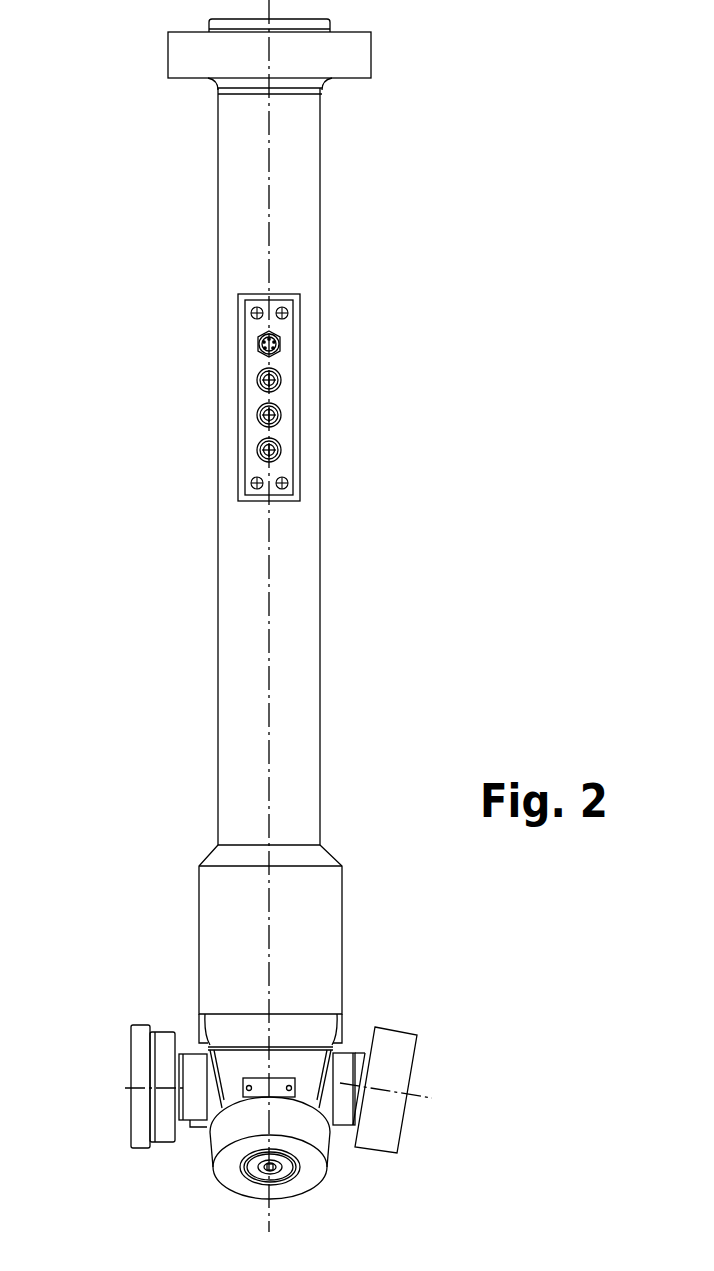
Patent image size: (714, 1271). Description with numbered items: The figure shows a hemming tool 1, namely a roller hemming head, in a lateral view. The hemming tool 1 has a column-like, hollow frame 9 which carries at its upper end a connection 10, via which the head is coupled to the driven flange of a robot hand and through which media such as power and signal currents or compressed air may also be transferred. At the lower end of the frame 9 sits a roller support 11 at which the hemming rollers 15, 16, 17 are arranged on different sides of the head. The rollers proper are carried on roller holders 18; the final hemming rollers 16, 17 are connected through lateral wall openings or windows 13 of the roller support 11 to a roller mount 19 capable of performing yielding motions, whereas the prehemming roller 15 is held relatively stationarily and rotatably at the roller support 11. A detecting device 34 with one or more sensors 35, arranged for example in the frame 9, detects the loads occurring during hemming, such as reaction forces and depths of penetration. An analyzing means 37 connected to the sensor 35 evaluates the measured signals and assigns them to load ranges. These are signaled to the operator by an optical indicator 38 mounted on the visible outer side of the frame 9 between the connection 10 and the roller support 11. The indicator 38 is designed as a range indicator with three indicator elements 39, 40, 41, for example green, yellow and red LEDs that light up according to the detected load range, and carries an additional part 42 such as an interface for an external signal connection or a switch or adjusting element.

The hemming tool 1 is at (318, 228).
The frame 9 is at (240, 633).
The connection 10 is at (178, 53).
The roller support 11 is at (342, 994).
The wall openings or windows 13 is at (267, 1041).
The prehemming roller 15 is at (223, 1142).
The final hemming roller 16 is at (138, 1119).
The final hemming roller 17 is at (388, 1127).
The roller holders 18 is at (194, 1066).
The roller mount 19 is at (246, 943).
The detecting device 34 is at (328, 565).
The sensor 35 is at (253, 750).
The analyzing means 37 is at (292, 373).
The indicator 38 is at (292, 418).
The indicator element 39 is at (258, 452).
The indicator element 40 is at (258, 415).
The indicator element 41 is at (258, 378).
The additional part 42 is at (258, 347).